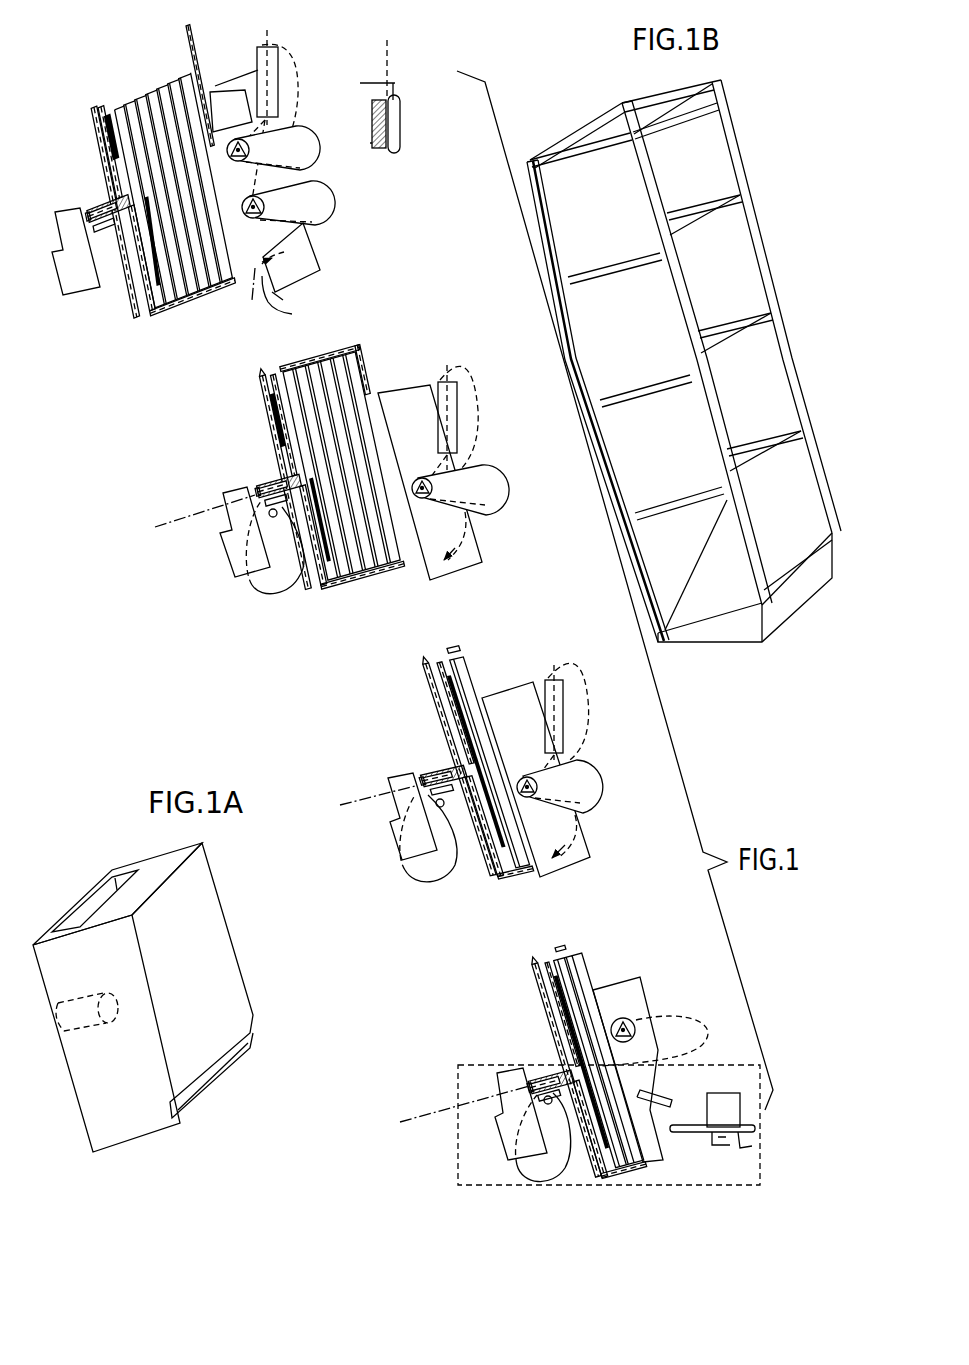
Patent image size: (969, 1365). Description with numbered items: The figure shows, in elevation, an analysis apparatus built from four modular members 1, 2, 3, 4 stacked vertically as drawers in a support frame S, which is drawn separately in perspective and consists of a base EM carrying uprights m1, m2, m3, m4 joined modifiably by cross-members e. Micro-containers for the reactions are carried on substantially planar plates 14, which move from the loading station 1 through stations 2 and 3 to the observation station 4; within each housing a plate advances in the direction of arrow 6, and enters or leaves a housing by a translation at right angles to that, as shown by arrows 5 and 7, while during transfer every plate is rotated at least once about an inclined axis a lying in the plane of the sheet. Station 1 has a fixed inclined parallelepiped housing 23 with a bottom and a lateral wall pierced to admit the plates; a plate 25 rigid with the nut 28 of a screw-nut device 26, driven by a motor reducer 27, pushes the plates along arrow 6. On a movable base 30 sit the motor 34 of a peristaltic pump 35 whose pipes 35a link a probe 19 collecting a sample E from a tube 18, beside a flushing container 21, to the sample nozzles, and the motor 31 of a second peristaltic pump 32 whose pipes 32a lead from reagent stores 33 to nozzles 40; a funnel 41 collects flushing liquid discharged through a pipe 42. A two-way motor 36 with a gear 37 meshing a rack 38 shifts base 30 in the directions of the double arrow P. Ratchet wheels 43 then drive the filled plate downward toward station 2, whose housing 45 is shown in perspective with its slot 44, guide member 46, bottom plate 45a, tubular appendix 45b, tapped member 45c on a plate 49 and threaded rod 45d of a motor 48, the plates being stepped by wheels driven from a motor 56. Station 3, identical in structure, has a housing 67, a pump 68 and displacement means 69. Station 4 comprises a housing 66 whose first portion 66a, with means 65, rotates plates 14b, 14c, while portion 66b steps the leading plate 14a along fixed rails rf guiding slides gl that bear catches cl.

In FIG. 1, the sample and reagent loading station 1 is at (118, 340).
In FIG. 1, the second station 2 is at (196, 622).
In FIG. 1, the third station 3 is at (375, 858).
In FIG. 1, the reaction medium observation station 4 is at (412, 1143).
In FIG. 1, the arrow indicating plate entry/exit direction 5 is at (268, 358).
In FIG. 1, the arrow indicating plate displacement direction 6 is at (243, 362).
In FIG. 1, the arrow indicating plate translation direction 7 is at (420, 587).
In FIG. 1, the plate 14 is at (138, 95).
In FIG. 1, the leading plate 14a is at (586, 970).
In FIG. 1, the plate in portion 66a 14b is at (565, 962).
In FIG. 1, the plate in portion 66a 14c is at (548, 962).
In FIG. 1, the tube 18 is at (398, 152).
In FIG. 1, the probe 19 is at (396, 112).
In FIG. 1, the flushing container 21 is at (382, 148).
In FIG. 1, the housing 23 is at (168, 318).
In FIG. 1, the plate 25 is at (100, 136).
In FIG. 1, the screw-nut device 26 is at (82, 198).
In FIG. 1, the motor reducer 27 is at (62, 290).
In FIG. 1, the nut 28 is at (100, 200).
In FIG. 1, the movable base 30 is at (322, 268).
In FIG. 1, the motor 31 is at (325, 242).
In FIG. 1, the peristaltic pump 32 is at (268, 208).
In FIG. 1, the pipes 32a is at (296, 60).
In FIG. 1, the reagent stores 33 is at (268, 46).
In FIG. 1, the motor 34 is at (312, 152).
In FIG. 1, the peristaltic pump 35 is at (252, 152).
In FIG. 1, the pipes 35a is at (328, 222).
In FIG. 1, the two-way rotation motor 36 is at (260, 96).
In FIG. 1, the gear 37 is at (205, 58).
In FIG. 1, the rack 38 is at (186, 40).
In FIG. 1, the nozzles 40 is at (298, 262).
In FIG. 1, the funnel 41 is at (286, 294).
In FIG. 1, the pipe 42 is at (294, 313).
In FIG. 1, the ratchet wheels 43 is at (270, 268).
In FIG. 1, the slot 44 is at (272, 376).
In FIG. 1A, the slot 44 is at (92, 898).
In FIG. 1, the housing 45 is at (308, 600).
In FIG. 1A, the housing 45 is at (268, 972).
In FIG. 1, the bottom plate 45a is at (280, 454).
In FIG. 1, the tubular appendix 45b is at (262, 590).
In FIG. 1A, the tubular appendix 45b is at (75, 1030).
In FIG. 1, the tapped member 45c is at (240, 540).
In FIG. 1, the threaded rod 45d is at (248, 488).
In FIG. 1, the guide member 46 is at (266, 392).
In FIG. 1, the motor 48 is at (236, 570).
In FIG. 1, the plate 49 is at (338, 612).
In FIG. 1, the motor 56 is at (496, 504).
In FIG. 1, the displacement and rotation means 65 is at (522, 1060).
In FIG. 1, the housing 66 is at (622, 1178).
In FIG. 1, the first housing portion 66a is at (528, 969).
In FIG. 1, the second housing portion 66b is at (650, 1178).
In FIG. 1, the housing 67 is at (494, 882).
In FIG. 1, the peristaltic pump 68 is at (546, 790).
In FIG. 1, the displacement and rotation means 69 is at (410, 757).
In FIG. 1, the sample E is at (400, 126).
In FIG. 1, the base displacement directions P is at (220, 52).
In FIG. 1, the plate rotation axis a is at (150, 534).
In FIG. 1, the fixed rails rf is at (578, 980).
In FIG. 1, the slides gl is at (592, 998).
In FIG. 1, the catches cl is at (640, 1165).
In FIG. 1B, the upright m1 is at (531, 160).
In FIG. 1B, the upright m2 is at (627, 102).
In FIG. 1B, the upright m3 is at (724, 92).
In FIG. 1B, the upright m4 is at (647, 170).
In FIG. 1B, the support frame s is at (753, 190).
In FIG. 1B, the cross-members e is at (610, 270).
In FIG. 1B, the base EM is at (725, 645).